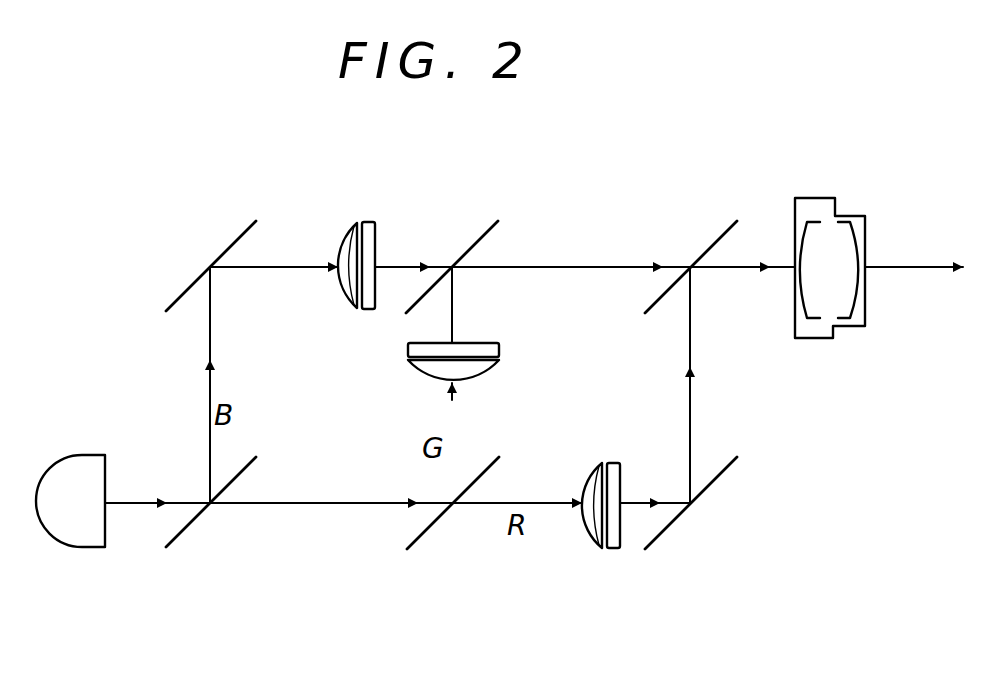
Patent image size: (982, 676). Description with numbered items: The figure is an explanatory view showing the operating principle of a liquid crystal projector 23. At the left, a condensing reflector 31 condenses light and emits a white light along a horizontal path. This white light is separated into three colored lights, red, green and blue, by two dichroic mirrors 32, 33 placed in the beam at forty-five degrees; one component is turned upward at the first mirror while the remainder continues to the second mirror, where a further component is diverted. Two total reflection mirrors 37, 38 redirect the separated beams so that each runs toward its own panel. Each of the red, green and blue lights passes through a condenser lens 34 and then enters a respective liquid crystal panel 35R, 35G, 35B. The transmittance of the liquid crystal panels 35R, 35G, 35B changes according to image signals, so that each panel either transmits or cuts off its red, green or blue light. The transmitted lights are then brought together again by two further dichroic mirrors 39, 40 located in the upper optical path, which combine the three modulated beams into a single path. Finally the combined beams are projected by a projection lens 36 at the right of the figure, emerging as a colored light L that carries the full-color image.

The liquid crystal projector 23 is at (727, 148).
The condensing reflector 31 is at (82, 548).
The dichroic mirror 32 is at (183, 533).
The dichroic mirror 33 is at (422, 535).
The condenser lens 34 is at (590, 540).
The liquid crystal panel 35B is at (367, 222).
The liquid crystal panel 35G is at (500, 348).
The liquid crystal panel 35R is at (612, 549).
The projection lens 36 is at (818, 340).
The total reflection mirror 37 is at (178, 294).
The total reflection mirror 38 is at (665, 535).
The dichroic mirror 39 is at (490, 222).
The dichroic mirror 40 is at (697, 243).
The colored light L is at (912, 272).